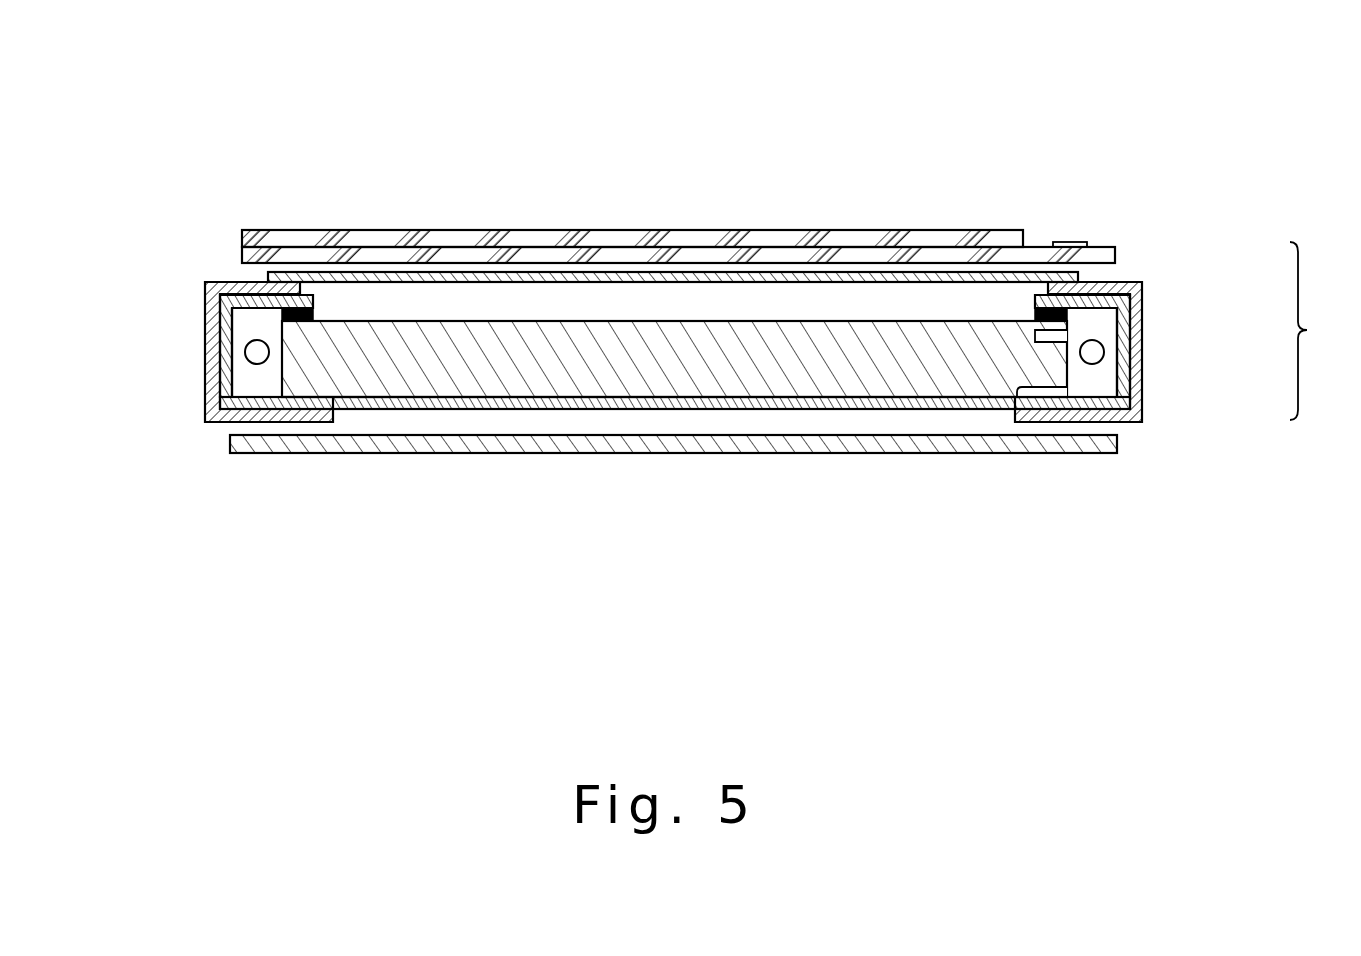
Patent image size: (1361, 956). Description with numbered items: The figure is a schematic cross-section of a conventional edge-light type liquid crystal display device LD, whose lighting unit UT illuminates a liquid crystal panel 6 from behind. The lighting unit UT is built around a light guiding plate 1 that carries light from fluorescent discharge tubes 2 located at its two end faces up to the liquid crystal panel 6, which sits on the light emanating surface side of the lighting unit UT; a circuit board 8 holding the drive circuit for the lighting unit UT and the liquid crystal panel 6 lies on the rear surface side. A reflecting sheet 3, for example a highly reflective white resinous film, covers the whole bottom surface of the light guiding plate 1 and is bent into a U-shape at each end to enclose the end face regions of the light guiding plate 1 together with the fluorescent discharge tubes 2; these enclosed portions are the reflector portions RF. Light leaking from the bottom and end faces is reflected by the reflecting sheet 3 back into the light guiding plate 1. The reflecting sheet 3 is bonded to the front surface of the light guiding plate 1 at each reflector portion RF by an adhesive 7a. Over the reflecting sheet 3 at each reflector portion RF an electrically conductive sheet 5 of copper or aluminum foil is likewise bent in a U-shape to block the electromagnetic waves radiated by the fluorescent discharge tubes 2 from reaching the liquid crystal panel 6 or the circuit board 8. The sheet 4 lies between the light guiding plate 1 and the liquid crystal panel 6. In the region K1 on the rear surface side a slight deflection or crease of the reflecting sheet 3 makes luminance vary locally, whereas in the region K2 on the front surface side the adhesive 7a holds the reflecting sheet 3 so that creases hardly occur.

The light guiding plate 1 is at (618, 372).
The fluorescent discharge tube 2 is at (252, 358).
The reflecting sheet 3 is at (220, 312).
The diffusion sheet 4 is at (533, 277).
The electrically conductive sheet 5 is at (206, 350).
The liquid crystal panel 6 is at (1017, 258).
The adhesive 7a is at (314, 314).
The circuit board 8 is at (462, 447).
The region K1 is at (1035, 387).
The region K2 is at (1050, 341).
The reflector portion RF is at (250, 336).
The liquid crystal display device LD is at (701, 65).
The lighting unit UT is at (1353, 342).